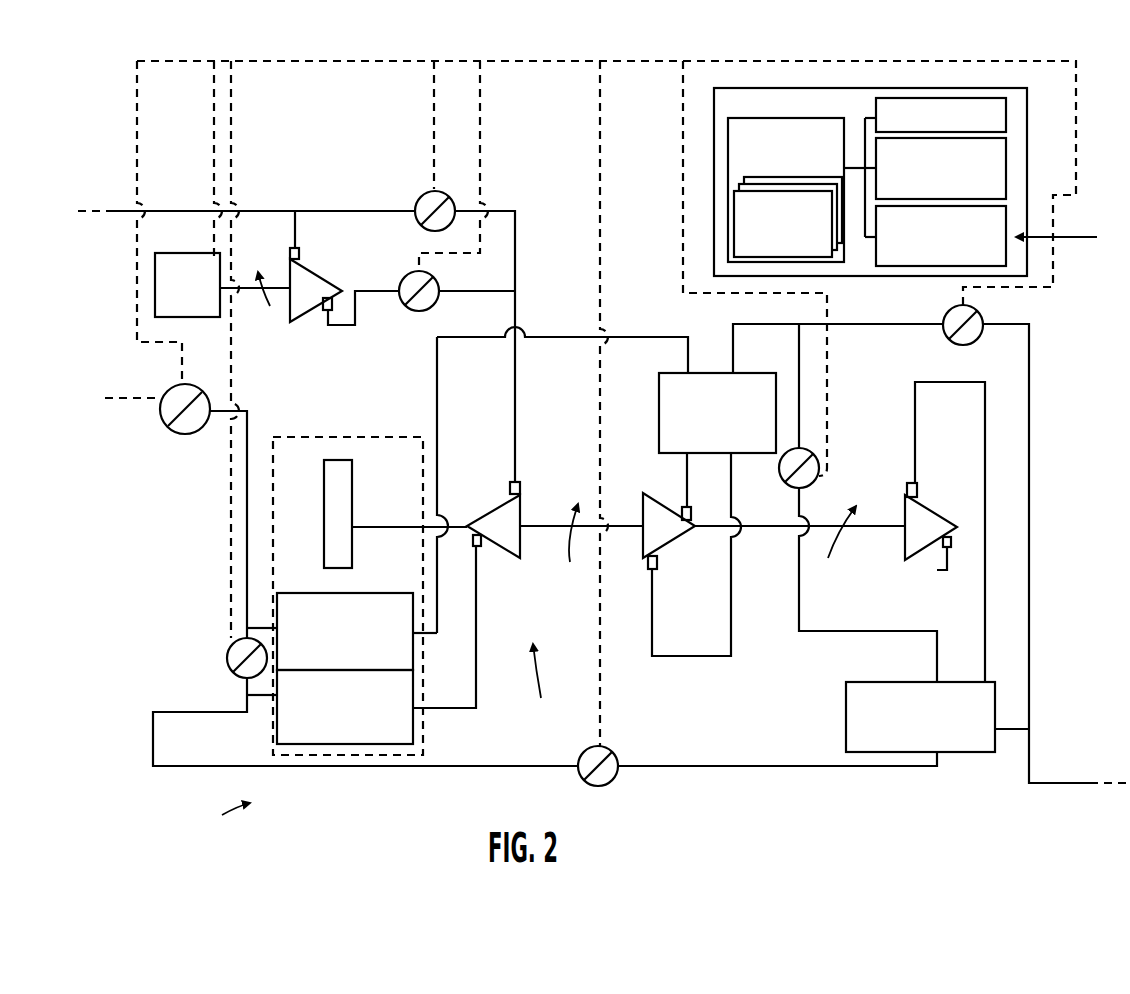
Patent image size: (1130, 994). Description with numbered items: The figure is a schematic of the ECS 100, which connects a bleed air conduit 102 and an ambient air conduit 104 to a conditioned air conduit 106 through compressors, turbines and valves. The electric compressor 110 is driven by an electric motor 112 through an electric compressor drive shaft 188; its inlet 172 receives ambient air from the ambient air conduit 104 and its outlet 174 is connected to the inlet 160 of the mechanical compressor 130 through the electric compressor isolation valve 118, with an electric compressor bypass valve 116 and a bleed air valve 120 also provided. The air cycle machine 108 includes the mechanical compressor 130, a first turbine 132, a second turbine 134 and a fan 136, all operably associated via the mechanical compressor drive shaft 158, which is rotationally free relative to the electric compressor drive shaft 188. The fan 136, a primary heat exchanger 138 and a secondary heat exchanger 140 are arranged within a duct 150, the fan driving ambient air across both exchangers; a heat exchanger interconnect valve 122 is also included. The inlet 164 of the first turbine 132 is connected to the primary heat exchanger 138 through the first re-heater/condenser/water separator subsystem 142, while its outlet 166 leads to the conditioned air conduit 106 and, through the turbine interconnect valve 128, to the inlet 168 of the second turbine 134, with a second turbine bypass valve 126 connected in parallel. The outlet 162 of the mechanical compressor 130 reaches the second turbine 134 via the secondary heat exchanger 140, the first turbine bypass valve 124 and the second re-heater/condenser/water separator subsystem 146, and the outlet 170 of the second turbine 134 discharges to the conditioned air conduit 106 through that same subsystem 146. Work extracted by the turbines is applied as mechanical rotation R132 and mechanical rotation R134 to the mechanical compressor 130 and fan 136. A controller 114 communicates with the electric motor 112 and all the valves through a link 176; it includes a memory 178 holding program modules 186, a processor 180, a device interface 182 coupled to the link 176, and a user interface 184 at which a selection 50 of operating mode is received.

The ECS 100 is at (219, 821).
The bleed air conduit 102 is at (248, 445).
The ambient air conduit 104 is at (198, 209).
The conditioned air conduit 106 is at (1058, 783).
The air cycle machine 108 is at (536, 688).
The electric compressor 110 is at (326, 277).
The electric motor 112 is at (176, 253).
The controller 114 is at (750, 88).
The electric compressor bypass valve 116 is at (421, 197).
The electric compressor isolation valve 118 is at (416, 311).
The bleed air valve 120 is at (168, 430).
The heat exchanger interconnect valve 122 is at (227, 660).
The first turbine bypass valve 124 is at (612, 780).
The second turbine bypass valve 126 is at (976, 339).
The turbine interconnect valve 128 is at (820, 476).
The mechanical compressor 130 is at (503, 556).
The first turbine 132 is at (680, 546).
The second turbine 134 is at (903, 547).
The fan 136 is at (324, 490).
The primary heat exchanger 138 is at (310, 593).
The secondary heat exchanger 140 is at (363, 752).
The first re-heater/condenser/water separator subsystem 142 is at (712, 346).
The second re-heater/condenser/water separator subsystem 146 is at (846, 690).
The duct 150 is at (365, 437).
The mechanical compressor drive shaft 158 is at (540, 518).
The inlet 160 is at (508, 488).
The outlet 162 is at (468, 537).
The inlet 164 is at (692, 512).
The outlet 166 is at (648, 568).
The inlet 168 is at (952, 538).
The outlet 170 is at (906, 482).
The inlet 172 is at (300, 256).
The outlet 174 is at (328, 325).
The link 176 is at (543, 62).
The memory 178 is at (815, 118).
The processor 180 is at (882, 98).
The device interface 182 is at (1006, 178).
The user interface 184 is at (878, 266).
The program modules 186 is at (734, 218).
The electric compressor drive shaft 188 is at (268, 317).
The mechanical rotation R132 is at (581, 546).
The mechanical rotation R134 is at (837, 545).
The selection 50 is at (1078, 239).